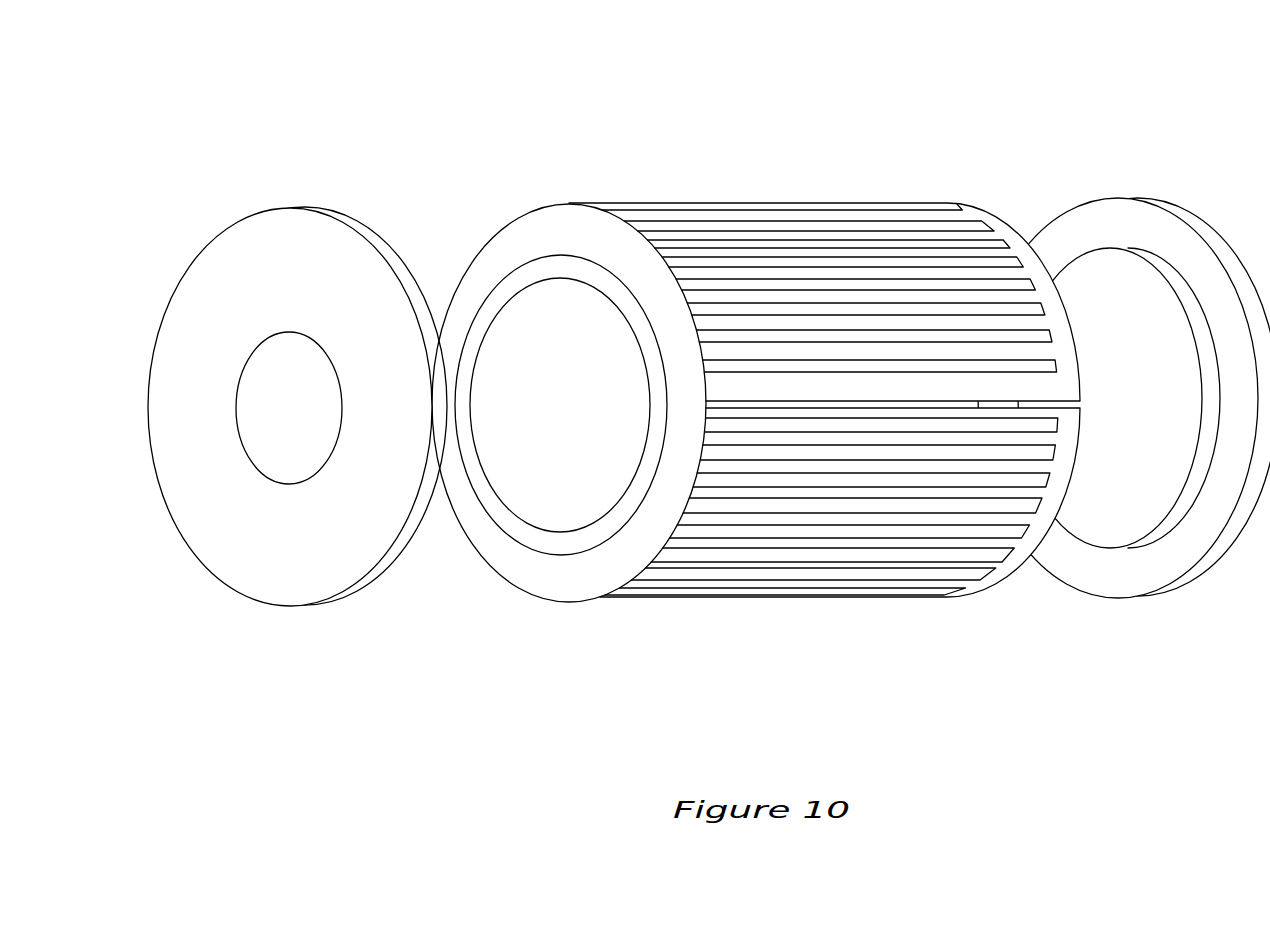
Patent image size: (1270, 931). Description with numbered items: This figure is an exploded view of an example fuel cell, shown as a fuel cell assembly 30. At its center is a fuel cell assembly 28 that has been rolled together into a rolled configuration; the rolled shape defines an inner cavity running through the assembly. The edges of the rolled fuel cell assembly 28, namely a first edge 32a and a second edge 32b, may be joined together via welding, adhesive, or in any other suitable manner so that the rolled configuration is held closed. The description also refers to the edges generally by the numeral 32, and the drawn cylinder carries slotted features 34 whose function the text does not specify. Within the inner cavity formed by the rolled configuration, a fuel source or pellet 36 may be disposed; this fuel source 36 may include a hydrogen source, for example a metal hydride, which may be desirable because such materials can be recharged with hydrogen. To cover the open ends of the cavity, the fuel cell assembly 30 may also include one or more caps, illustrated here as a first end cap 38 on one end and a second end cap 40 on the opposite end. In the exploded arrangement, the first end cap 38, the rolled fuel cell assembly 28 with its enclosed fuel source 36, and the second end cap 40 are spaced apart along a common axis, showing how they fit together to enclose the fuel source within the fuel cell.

The fuel cell assembly 30 is at (709, 349).
The fuel cell assembly 28 is at (768, 396).
The cylindrical body 32 is at (760, 396).
The first edge 32a is at (702, 402).
The second edge 32b is at (670, 412).
The slots 34 is at (877, 405).
The fuel source 36 is at (556, 510).
The first end cap 38 is at (262, 572).
The second end cap 40 is at (1125, 580).